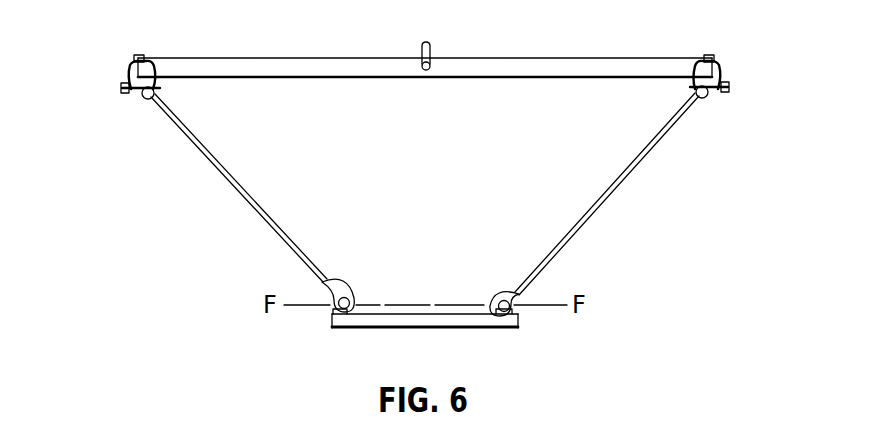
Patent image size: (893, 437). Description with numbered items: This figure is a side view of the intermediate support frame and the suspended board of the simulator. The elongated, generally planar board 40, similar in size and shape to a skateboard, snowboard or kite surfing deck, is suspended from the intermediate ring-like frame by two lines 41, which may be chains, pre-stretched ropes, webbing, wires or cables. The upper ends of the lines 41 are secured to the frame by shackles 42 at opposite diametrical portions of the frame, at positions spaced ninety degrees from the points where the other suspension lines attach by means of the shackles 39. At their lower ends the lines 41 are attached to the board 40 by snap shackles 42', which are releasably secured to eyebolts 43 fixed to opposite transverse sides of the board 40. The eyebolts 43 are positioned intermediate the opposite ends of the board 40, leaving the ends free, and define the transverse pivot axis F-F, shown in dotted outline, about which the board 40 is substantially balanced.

The shackle 39 is at (425, 43).
The board 40 is at (397, 329).
The line 41 is at (225, 178).
The shackle 42 is at (415, 55).
The snap shackle 42' is at (433, 286).
The eyebolt 43 is at (523, 316).